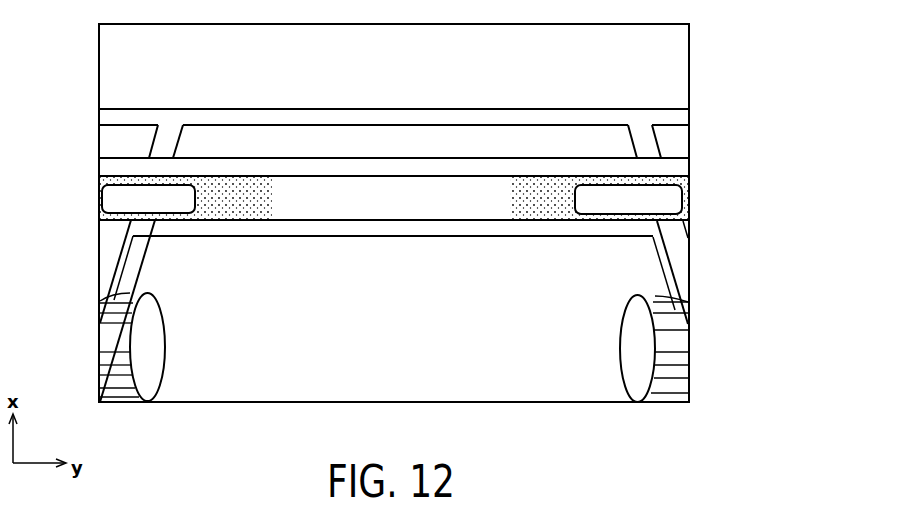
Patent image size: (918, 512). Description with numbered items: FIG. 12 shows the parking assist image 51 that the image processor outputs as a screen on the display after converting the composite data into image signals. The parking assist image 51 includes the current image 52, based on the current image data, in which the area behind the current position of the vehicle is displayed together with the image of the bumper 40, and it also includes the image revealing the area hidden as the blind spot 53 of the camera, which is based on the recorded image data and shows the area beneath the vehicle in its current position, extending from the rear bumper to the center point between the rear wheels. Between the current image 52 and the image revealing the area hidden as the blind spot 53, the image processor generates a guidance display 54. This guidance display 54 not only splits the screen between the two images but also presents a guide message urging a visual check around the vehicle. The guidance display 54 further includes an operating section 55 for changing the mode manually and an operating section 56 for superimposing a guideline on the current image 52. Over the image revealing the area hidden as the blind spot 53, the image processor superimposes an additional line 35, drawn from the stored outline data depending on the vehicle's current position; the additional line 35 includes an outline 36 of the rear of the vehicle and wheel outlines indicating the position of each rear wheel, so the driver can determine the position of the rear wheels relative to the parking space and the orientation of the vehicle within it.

The parking assist image 51 is at (99, 58).
The current image 52 is at (683, 65).
The image of the bumper 40 is at (683, 167).
The guidance display 54 is at (552, 210).
The operating section for superimposing a guideline 56 is at (102, 196).
The operating section for changing the mode 55 is at (684, 200).
The image revealing the area hidden as the blind spot 53 is at (676, 254).
The additional line 35 is at (330, 237).
The outline of the rear of the vehicle 36 is at (423, 237).